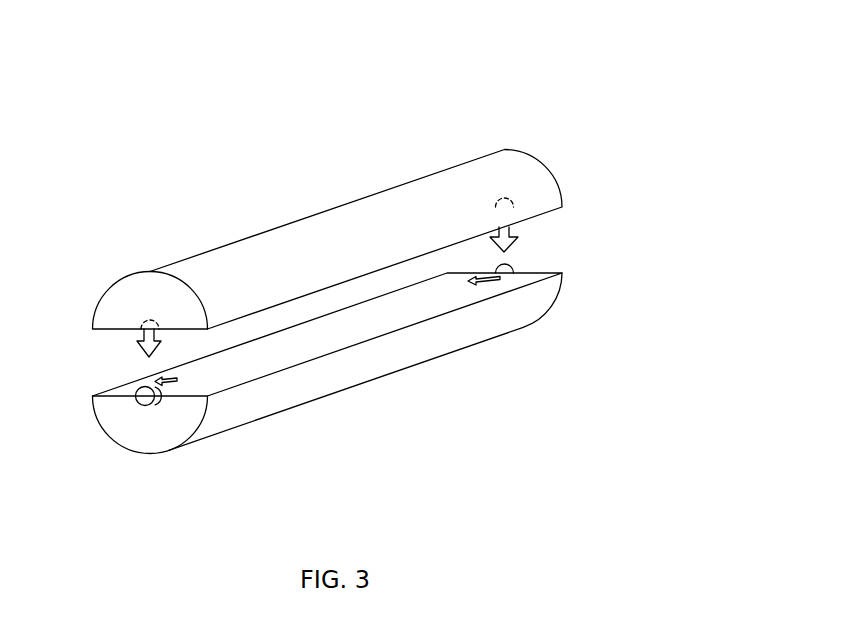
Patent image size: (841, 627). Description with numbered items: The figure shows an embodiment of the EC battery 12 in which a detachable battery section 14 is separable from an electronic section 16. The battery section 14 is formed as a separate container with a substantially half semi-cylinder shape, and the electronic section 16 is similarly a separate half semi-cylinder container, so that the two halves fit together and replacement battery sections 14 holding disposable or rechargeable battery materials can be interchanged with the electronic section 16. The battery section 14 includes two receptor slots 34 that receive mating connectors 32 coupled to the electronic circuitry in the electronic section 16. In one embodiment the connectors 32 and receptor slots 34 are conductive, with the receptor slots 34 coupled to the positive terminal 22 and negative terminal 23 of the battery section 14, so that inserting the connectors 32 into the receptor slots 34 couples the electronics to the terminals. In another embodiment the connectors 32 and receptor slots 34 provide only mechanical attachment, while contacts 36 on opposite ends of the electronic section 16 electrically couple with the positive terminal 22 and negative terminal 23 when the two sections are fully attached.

The EC battery 12 is at (676, 102).
The battery section 14 is at (537, 300).
The electronic section 16 is at (275, 240).
The positive terminal 22 is at (138, 402).
The negative terminal 23 is at (513, 267).
The connectors 32 is at (140, 350).
The receptor slots 34 is at (178, 380).
The contacts 36 is at (149, 320).